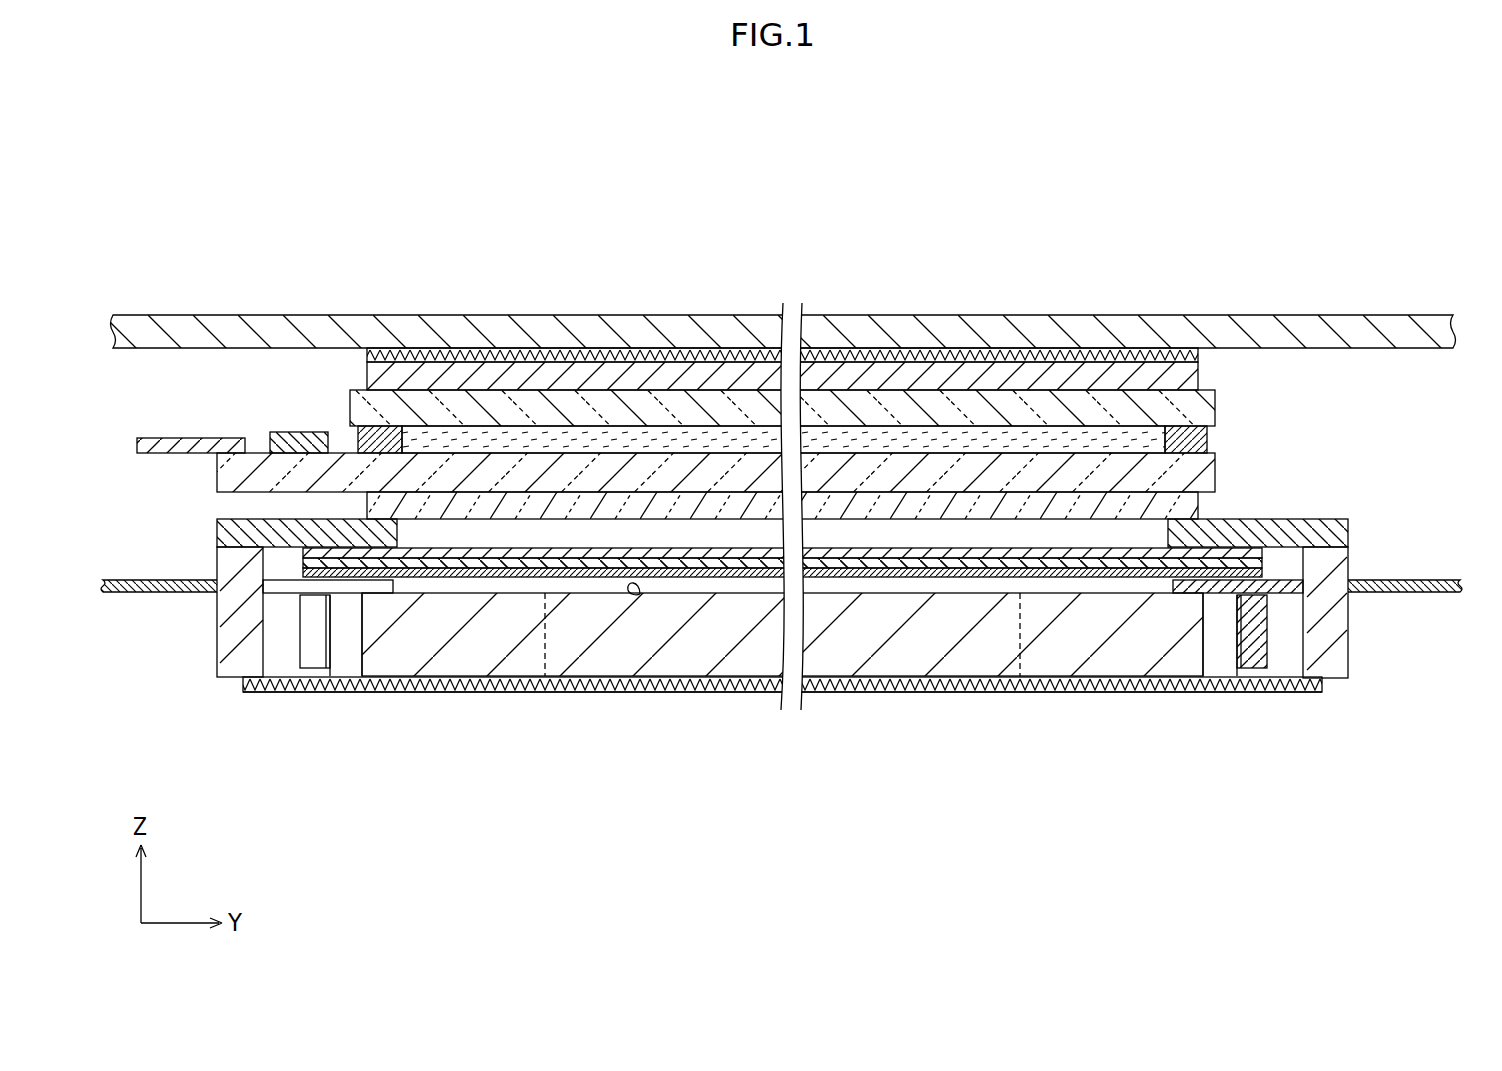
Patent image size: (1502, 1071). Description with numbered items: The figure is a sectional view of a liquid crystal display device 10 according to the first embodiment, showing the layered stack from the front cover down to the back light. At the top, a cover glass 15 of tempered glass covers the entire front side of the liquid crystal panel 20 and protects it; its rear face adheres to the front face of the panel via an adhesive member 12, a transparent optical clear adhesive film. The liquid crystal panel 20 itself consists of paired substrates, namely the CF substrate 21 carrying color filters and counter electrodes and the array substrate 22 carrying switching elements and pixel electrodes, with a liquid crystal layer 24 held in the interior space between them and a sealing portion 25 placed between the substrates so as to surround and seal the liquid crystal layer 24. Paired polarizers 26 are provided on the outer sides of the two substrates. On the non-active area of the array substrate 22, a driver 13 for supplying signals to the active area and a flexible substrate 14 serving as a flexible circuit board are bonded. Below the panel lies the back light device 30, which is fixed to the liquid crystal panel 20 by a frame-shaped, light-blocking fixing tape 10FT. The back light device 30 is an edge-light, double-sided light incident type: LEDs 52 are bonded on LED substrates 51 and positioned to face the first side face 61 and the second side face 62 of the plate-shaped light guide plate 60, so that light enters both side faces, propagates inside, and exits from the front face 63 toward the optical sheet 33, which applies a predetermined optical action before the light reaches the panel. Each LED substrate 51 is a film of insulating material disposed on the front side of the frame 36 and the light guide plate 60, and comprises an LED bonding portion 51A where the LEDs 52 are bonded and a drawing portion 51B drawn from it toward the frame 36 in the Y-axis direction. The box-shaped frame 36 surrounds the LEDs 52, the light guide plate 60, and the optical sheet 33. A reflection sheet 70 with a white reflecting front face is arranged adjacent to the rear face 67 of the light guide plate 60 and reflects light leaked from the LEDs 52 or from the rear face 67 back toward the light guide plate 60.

The liquid crystal display device 10 is at (1126, 288).
The cover glass 15 is at (1340, 318).
The adhesive member 12 is at (1200, 353).
The polarizers 26 is at (493, 385).
The CF substrate 21 is at (543, 403).
The array substrate 22 is at (582, 467).
The liquid crystal layer 24 is at (680, 440).
The sealing portion 25 is at (360, 436).
The liquid crystal panel 20 is at (1247, 413).
The flexible substrate 14 is at (180, 440).
The fixing tape 10FT is at (275, 530).
The driver 13 is at (293, 437).
The optical sheet 33 is at (913, 550).
The LED substrate 51 is at (784, 590).
The LED bonding portion 51A is at (262, 610).
The drawing portion 51B is at (135, 582).
The frame 36 is at (258, 570).
The back light device 30 is at (877, 731).
The light guide plate 60 is at (562, 648).
The first side face 61 is at (355, 629).
The second side face 62 is at (1203, 626).
The front face 63 is at (640, 594).
The rear face 67 is at (693, 681).
The reflection sheet 70 is at (757, 693).
The LEDs 52 is at (310, 645).